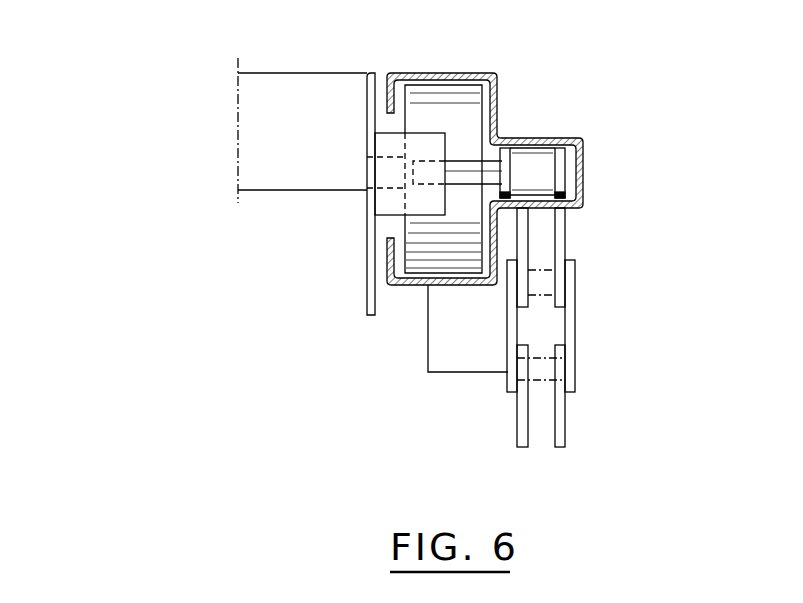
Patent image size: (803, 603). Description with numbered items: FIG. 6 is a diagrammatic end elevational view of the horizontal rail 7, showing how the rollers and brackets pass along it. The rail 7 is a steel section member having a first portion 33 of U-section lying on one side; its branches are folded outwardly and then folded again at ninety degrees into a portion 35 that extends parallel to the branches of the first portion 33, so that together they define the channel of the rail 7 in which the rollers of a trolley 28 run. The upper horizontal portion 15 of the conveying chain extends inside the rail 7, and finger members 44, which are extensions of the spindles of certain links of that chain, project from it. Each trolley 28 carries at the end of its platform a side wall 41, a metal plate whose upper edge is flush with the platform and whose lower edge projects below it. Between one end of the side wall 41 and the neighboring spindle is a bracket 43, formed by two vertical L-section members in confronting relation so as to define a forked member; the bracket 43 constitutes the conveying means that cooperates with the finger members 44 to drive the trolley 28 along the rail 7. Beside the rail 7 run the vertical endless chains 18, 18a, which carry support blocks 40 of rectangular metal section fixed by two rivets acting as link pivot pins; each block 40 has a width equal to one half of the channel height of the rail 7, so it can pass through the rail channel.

The rail 7 is at (542, 85).
The trolley 28 is at (273, 80).
The side wall 41 is at (370, 78).
The portion 35 is at (446, 73).
The first portion 33 is at (558, 138).
The bracket 43 is at (393, 203).
The finger member 44 is at (470, 160).
The upper horizontal portion 15 is at (543, 177).
The block 40 is at (460, 358).
The endless chain 18 is at (570, 337).
The chain link 18a is at (599, 326).